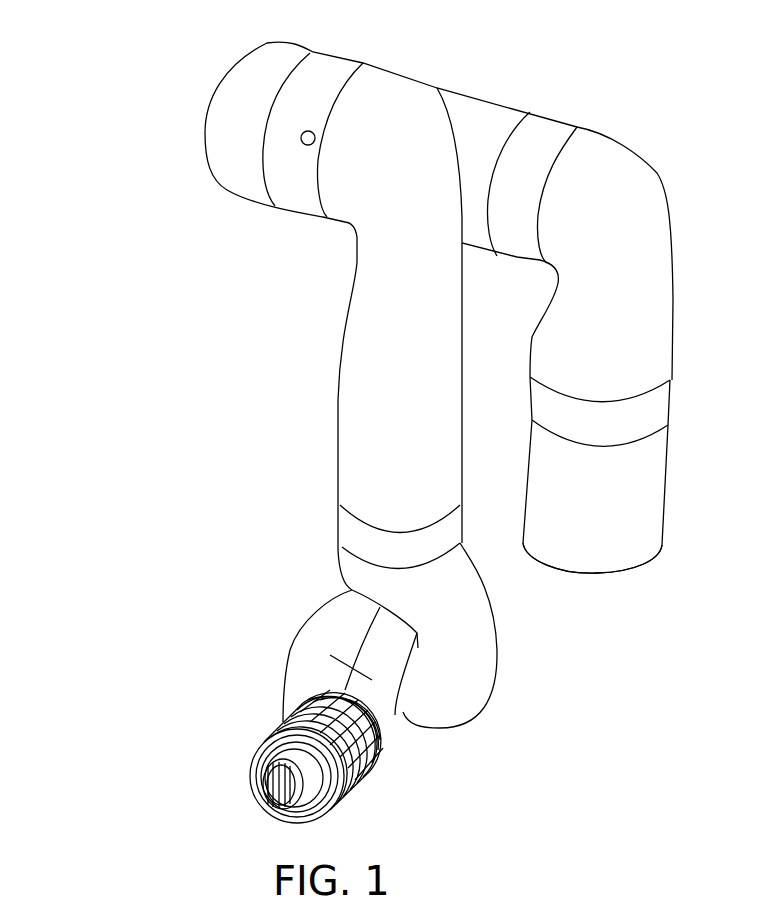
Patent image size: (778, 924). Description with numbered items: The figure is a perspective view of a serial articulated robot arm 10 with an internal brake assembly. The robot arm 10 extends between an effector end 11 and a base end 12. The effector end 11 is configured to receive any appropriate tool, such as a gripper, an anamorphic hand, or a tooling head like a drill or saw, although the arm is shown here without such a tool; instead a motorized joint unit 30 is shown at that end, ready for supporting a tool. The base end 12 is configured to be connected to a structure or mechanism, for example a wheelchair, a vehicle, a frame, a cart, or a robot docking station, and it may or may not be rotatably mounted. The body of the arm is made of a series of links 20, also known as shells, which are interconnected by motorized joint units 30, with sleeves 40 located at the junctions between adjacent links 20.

The robot arm 10 is at (113, 328).
The effector end 11 is at (252, 730).
The base end 12 is at (597, 586).
The link 20 is at (472, 113).
The motorized joint unit 30 is at (353, 790).
The sleeve 40 is at (355, 58).